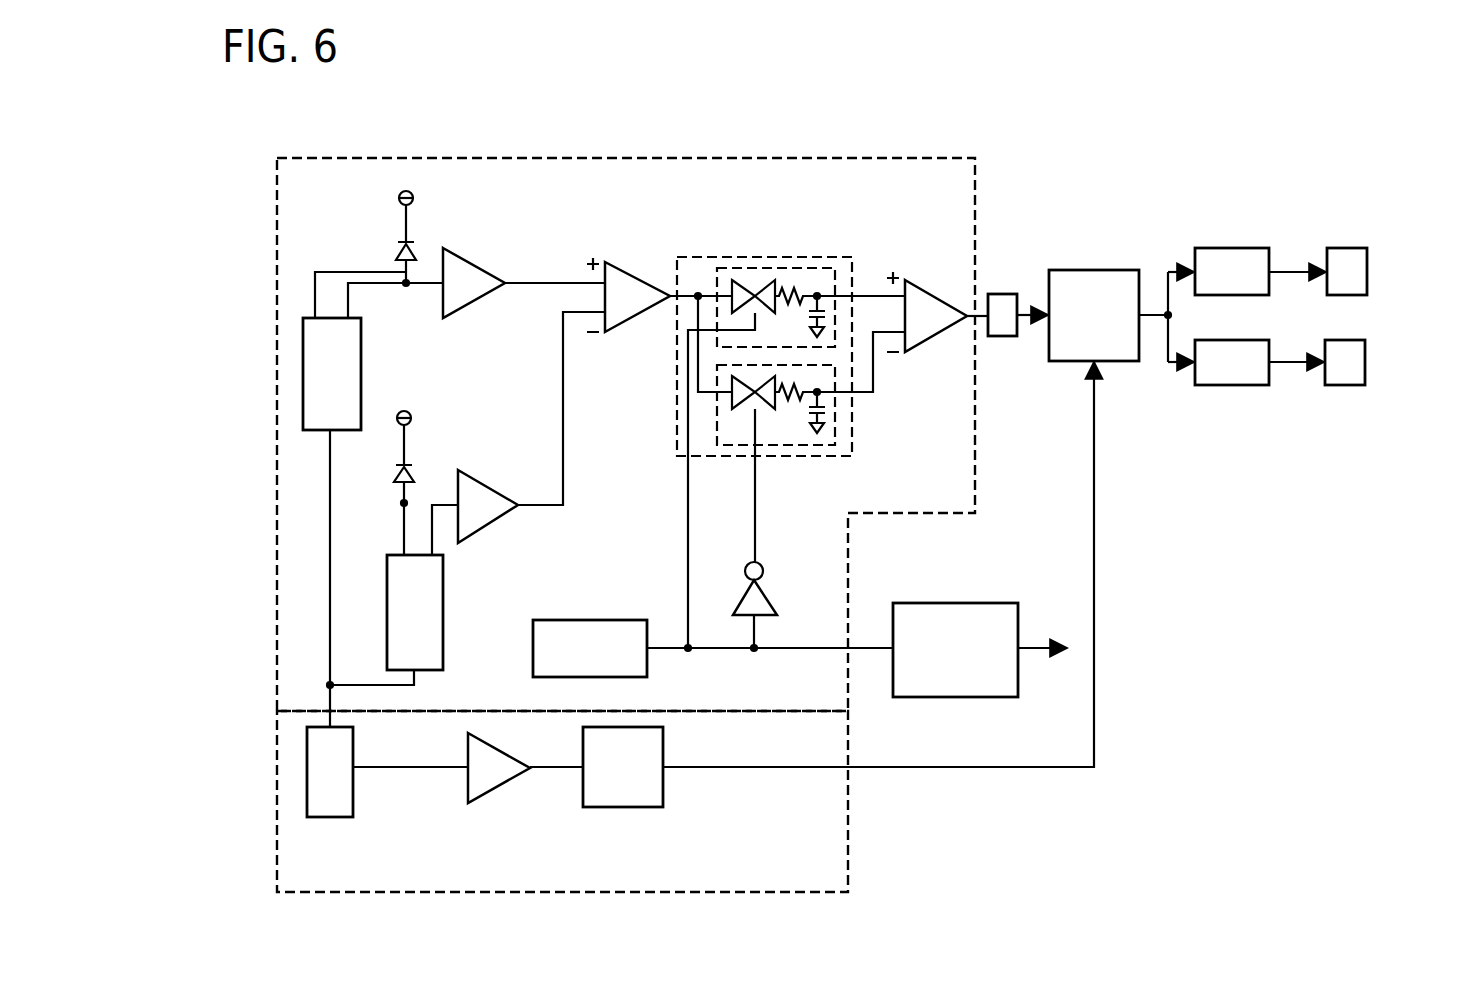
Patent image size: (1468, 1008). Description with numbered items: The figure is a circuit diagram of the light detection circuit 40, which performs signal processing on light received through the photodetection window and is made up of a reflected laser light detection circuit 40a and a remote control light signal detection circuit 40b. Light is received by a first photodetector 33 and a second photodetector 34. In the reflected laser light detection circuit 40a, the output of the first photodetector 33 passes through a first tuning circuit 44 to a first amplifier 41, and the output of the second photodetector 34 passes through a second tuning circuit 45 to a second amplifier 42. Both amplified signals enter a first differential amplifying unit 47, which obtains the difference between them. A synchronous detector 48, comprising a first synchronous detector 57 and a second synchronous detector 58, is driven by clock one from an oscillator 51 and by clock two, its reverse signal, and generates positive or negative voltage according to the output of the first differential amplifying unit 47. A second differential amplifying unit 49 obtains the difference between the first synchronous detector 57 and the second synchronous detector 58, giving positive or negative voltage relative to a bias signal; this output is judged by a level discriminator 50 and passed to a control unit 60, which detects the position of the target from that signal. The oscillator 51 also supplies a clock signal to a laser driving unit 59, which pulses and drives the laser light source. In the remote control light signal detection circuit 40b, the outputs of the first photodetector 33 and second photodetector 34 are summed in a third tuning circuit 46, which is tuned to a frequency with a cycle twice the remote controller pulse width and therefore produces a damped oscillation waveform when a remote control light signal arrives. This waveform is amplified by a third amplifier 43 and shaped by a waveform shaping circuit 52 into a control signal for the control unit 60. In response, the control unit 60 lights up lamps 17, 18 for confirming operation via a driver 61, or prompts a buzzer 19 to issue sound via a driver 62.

The lamp 17 is at (1385, 240).
The lamp 18 is at (1348, 248).
The buzzer 19 is at (1343, 385).
The first photodetector 33 is at (397, 243).
The second photodetector 34 is at (413, 478).
The light detection circuit 40 is at (1024, 186).
The reflected laser light detection circuit 40a is at (725, 158).
The remote control light signal detection circuit 40b is at (849, 843).
The first amplifier 41 is at (479, 266).
The second amplifier 42 is at (495, 492).
The third amplifier 43 is at (515, 757).
The first tuning circuit 44 is at (361, 365).
The second tuning circuit 45 is at (443, 600).
The third tuning circuit 46 is at (353, 805).
The first differential amplifying unit 47 is at (637, 278).
The synchronous detector 48 is at (838, 257).
The second differential amplifying unit 49 is at (920, 281).
The level discriminator 50 is at (998, 294).
The oscillator 51 is at (593, 620).
The waveform shaping circuit 52 is at (663, 787).
The first synchronous detector 57 is at (738, 265).
The second synchronous detector 58 is at (815, 456).
The laser driving unit 59 is at (944, 697).
The control unit 60 is at (1088, 270).
The driver 61 is at (1225, 248).
The driver 62 is at (1212, 385).